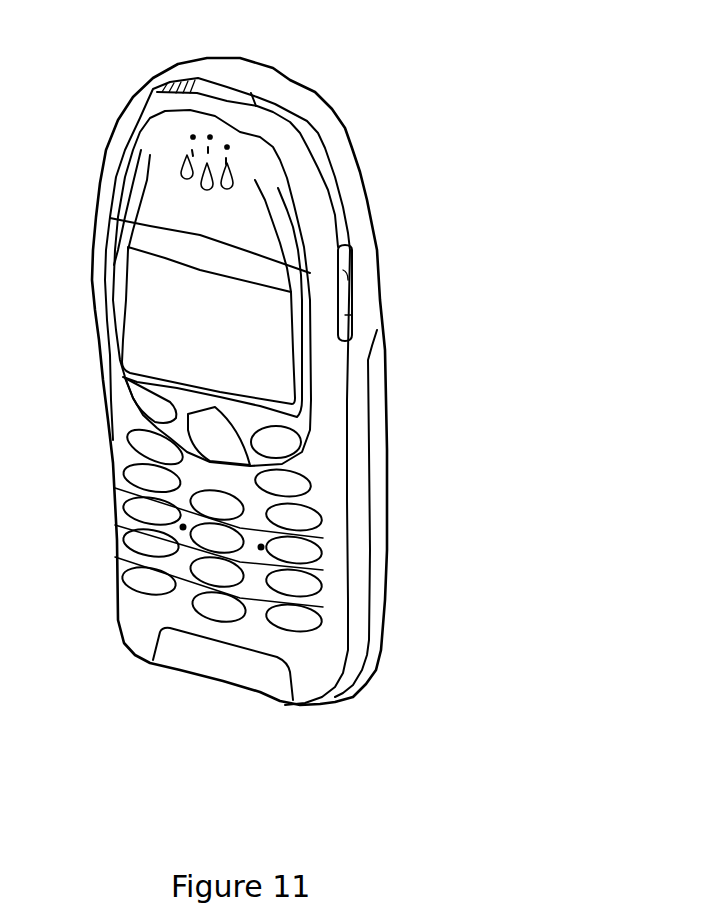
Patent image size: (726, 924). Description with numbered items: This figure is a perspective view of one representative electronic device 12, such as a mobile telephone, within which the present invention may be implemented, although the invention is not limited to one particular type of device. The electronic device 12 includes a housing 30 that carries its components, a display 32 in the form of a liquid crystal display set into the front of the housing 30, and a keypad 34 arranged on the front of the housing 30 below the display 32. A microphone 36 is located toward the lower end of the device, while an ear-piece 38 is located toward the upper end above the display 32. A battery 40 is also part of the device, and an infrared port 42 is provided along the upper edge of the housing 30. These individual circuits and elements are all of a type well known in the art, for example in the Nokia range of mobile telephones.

The electronic device 12 is at (336, 69).
The housing 30 is at (360, 190).
The display 32 is at (275, 358).
The keypad 34 is at (298, 630).
The microphone 36 is at (172, 658).
The ear-piece 38 is at (192, 157).
The battery 40 is at (377, 610).
The infrared port 42 is at (232, 87).